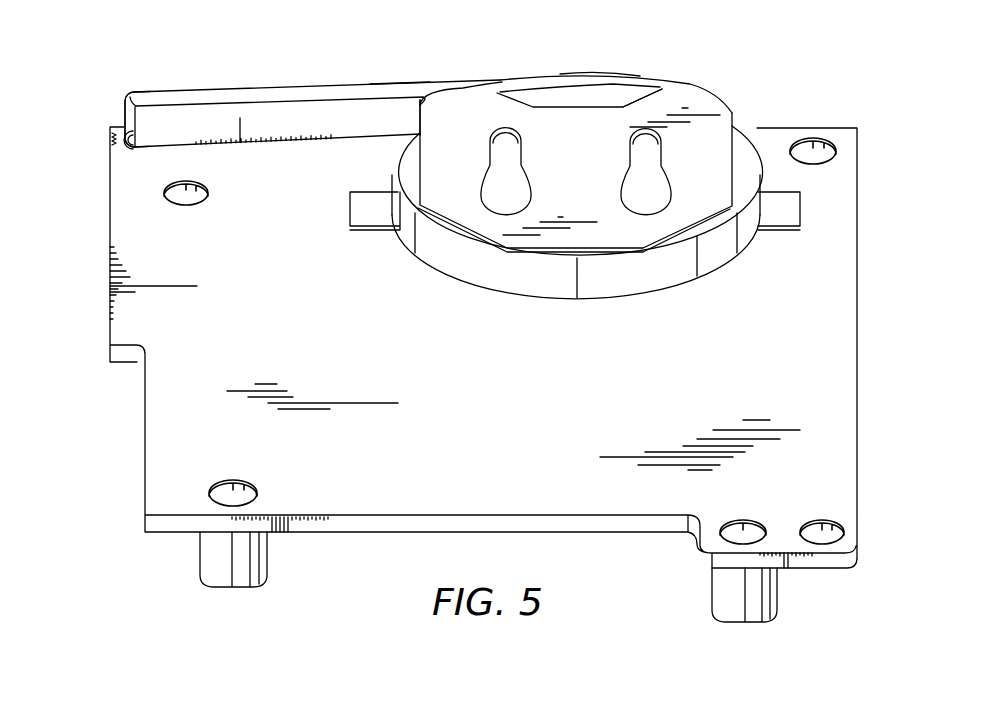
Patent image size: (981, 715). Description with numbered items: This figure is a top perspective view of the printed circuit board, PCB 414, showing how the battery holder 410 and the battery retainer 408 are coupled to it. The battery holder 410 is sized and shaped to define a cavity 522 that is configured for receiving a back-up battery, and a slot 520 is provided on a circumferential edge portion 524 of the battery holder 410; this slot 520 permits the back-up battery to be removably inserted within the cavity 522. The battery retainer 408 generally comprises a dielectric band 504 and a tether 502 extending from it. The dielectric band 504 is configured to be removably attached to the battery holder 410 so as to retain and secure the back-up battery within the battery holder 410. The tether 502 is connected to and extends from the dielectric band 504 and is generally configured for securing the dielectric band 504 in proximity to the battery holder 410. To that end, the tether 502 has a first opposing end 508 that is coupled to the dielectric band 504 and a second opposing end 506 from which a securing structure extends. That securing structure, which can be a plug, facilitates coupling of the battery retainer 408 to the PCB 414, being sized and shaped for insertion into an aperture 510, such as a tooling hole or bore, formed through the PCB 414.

The battery retainer 408 is at (589, 56).
The battery holder 410 is at (720, 90).
The printed circuit board 414 is at (797, 127).
The tether 502 is at (287, 85).
The dielectric band 504 is at (552, 79).
The second opposing end 506 is at (123, 88).
The first opposing end 508 is at (395, 78).
The aperture 510 is at (127, 151).
The slot 520 is at (645, 84).
The cavity 522 is at (485, 187).
The circumferential edge portion 524 is at (409, 117).